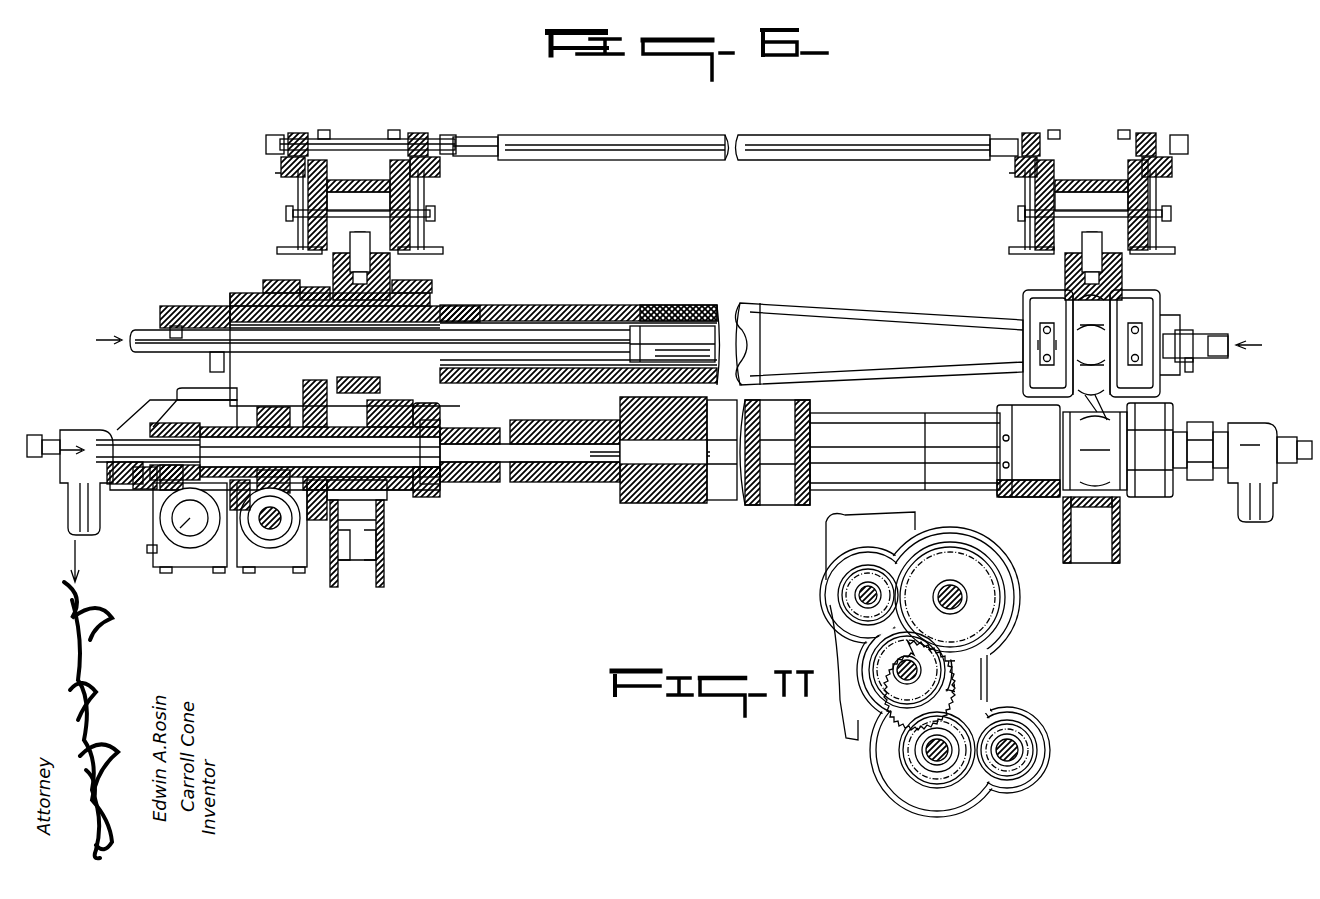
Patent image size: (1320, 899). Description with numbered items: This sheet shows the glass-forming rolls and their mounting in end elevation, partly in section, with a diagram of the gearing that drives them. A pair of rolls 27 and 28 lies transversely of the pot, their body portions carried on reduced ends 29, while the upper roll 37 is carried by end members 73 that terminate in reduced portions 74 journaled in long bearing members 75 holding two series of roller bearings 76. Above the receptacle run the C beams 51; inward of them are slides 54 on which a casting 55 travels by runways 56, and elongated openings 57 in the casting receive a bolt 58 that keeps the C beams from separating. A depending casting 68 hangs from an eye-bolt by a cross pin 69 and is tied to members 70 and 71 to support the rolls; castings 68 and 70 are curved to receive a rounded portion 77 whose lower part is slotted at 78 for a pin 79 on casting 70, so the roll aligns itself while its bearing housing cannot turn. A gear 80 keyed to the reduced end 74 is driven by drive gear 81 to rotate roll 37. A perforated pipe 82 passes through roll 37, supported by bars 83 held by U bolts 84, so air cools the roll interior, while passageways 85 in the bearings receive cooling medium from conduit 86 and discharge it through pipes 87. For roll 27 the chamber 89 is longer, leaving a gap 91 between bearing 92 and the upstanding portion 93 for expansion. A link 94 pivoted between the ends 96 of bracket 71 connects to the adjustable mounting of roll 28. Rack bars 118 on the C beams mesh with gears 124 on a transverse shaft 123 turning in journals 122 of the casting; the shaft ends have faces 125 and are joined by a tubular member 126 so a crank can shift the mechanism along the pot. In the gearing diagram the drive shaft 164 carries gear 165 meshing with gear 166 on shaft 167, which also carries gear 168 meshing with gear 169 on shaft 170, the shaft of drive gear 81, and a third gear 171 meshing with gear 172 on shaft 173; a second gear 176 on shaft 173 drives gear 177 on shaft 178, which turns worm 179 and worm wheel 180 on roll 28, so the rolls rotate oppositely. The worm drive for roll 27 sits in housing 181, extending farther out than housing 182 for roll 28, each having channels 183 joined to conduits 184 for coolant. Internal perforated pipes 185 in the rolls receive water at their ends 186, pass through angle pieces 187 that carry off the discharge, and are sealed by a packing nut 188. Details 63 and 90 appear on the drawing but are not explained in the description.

In FIG. 6, the roll 27 is at (800, 500).
In FIG. 6, the roll 28 is at (635, 500).
In FIG. 6, the reduced ends 29 is at (450, 485).
In FIG. 6, the upper roll 37 is at (785, 300).
In FIG. 6, the C beams 51 is at (295, 232).
In FIG. 6, the slides 54 is at (296, 200).
In FIG. 6, the casting 55 is at (1085, 180).
In FIG. 6, the runways 56 is at (430, 190).
In FIG. 6, the transverse openings 57 is at (428, 230).
In FIG. 6, the bolt 58 is at (385, 186).
In FIG. 6, the pin 63 is at (355, 258).
In FIG. 6, the depending casting 68 is at (1085, 258).
In FIG. 6, the cross pin 69 is at (1168, 250).
In FIG. 6, the casting 70 is at (1095, 432).
In FIG. 6, the bracket 71 is at (395, 492).
In FIG. 6, the end members 73 is at (610, 300).
In FIG. 6, the reduced portions 74 is at (440, 308).
In FIG. 6, the bearing members 75 is at (385, 288).
In FIG. 6, the roller bearings 76 is at (310, 275).
In FIG. 6, the rounded portion 77 is at (1120, 290).
In FIG. 6, the slot 78 is at (1160, 320).
In FIG. 6, the pin 79 is at (1140, 405).
In FIG. 6, the gear 80 is at (262, 300).
In FIG. 6, the drive gear 81 is at (228, 314).
In FIG. 6, the perforated pipe 82 is at (712, 300).
In FIG. 6, the bars 83 is at (208, 352).
In FIG. 6, the U bolts 84 is at (178, 325).
In FIG. 6, the passageways 85 is at (290, 270).
In FIG. 6, the conduit 86 is at (1150, 300).
In FIG. 6, the pipes 87 is at (1175, 320).
In FIG. 6, the chamber 89 is at (1015, 410).
In FIG. 6, the hub 90 is at (1060, 290).
In FIG. 6, the gap 91 is at (1040, 495).
In FIG. 6, the bearing 92 is at (1020, 490).
In FIG. 6, the upstanding portion 93 is at (1068, 505).
In FIG. 6, the link 94 is at (385, 538).
In FIG. 6, the ends 96 is at (385, 580).
In FIG. 6, the rack bars 118 is at (288, 166).
In FIG. 6, the journals 122 is at (325, 130).
In FIG. 6, the shaft 123 is at (358, 139).
In FIG. 6, the gears 124 is at (300, 132).
In FIG. 6, the faces 125 is at (270, 139).
In FIG. 6, the tubular member 126 is at (645, 135).
In FIG. 11, the drive shaft 164 is at (858, 597).
In FIG. 11, the gear 165 is at (873, 570).
In FIG. 11, the gear 166 is at (865, 648).
In FIG. 11, the shaft 167 is at (895, 678).
In FIG. 11, the gear 168 is at (935, 668).
In FIG. 11, the gear 169 is at (993, 582).
In FIG. 11, the shaft 170 is at (948, 586).
In FIG. 11, the third gear 171 is at (960, 695).
In FIG. 11, the gear 172 is at (905, 748).
In FIG. 11, the shaft 173 is at (930, 760).
In FIG. 11, the second gear 176 is at (1020, 720).
In FIG. 11, the gear 177 is at (1030, 748).
In FIG. 11, the shaft 178 is at (1025, 765).
In FIG. 6, the worm 179 is at (288, 560).
In FIG. 6, the worm wheel 180 is at (230, 562).
In FIG. 6, the housing 181 is at (160, 548).
In FIG. 6, the housing 182 is at (328, 568).
In FIG. 6, the channels 183 is at (296, 560).
In FIG. 6, the conduits 184 is at (150, 552).
In FIG. 6, the internal perforated pipes 185 is at (545, 478).
In FIG. 6, the ends 186 is at (118, 422).
In FIG. 6, the angle pieces 187 is at (170, 400).
In FIG. 6, the packing nut 188 is at (1275, 428).